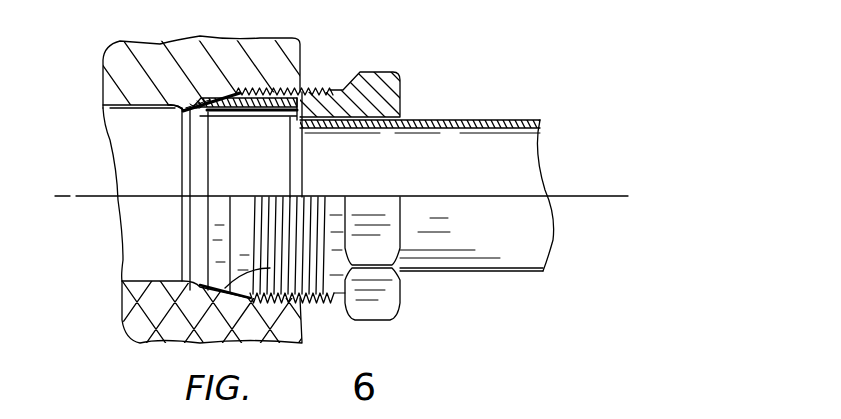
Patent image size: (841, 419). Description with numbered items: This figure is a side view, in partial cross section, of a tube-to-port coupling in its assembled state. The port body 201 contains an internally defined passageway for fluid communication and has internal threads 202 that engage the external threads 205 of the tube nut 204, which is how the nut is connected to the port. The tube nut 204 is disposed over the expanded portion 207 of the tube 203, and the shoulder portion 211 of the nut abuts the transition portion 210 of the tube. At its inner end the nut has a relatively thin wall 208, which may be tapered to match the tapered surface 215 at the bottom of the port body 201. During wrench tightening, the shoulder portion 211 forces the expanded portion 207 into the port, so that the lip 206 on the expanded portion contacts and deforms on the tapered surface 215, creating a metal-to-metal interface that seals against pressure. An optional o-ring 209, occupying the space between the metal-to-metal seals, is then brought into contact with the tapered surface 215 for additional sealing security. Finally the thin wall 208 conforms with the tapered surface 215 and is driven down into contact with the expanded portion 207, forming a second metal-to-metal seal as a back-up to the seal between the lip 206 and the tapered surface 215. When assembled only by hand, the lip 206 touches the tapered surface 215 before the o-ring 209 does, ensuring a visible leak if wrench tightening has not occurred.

The port body 201 is at (140, 165).
The internal threads 202 is at (283, 290).
The tube 203 is at (483, 119).
The tube nut 204 is at (408, 312).
The external threads 205 is at (180, 336).
The lip 206 is at (168, 100).
The expanded portion 207 is at (250, 117).
The thin wall 208 is at (224, 100).
The o-ring 209 is at (200, 101).
The transition portion 210 is at (272, 94).
The shoulder portion 211 is at (333, 92).
The tapered surface 215 is at (245, 301).